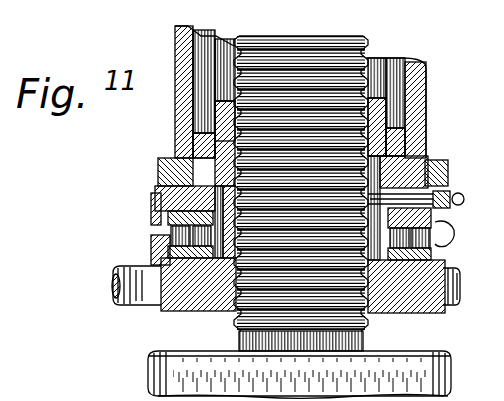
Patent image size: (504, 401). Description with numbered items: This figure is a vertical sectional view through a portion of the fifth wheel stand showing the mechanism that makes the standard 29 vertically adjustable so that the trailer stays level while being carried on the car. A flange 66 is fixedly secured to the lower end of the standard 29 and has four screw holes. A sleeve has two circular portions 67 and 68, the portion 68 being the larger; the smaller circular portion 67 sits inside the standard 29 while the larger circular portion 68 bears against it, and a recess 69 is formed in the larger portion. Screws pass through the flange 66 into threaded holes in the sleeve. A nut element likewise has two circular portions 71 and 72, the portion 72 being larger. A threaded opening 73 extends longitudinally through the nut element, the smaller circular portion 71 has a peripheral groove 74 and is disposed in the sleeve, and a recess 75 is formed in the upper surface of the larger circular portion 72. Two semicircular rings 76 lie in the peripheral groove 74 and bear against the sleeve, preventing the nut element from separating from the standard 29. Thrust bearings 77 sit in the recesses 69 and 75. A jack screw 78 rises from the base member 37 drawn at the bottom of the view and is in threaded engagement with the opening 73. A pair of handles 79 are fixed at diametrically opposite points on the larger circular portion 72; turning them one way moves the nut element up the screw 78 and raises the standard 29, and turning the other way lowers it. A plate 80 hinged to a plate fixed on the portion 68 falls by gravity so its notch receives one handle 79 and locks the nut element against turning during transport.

The standard 29 is at (167, 32).
The base plate 37 is at (148, 358).
The flange 66 is at (428, 152).
The smaller circular portion of sleeve 67 is at (182, 150).
The larger circular portion of sleeve 68 is at (150, 182).
The recess 69 is at (143, 207).
The smaller circular portion of nut element 71 is at (372, 100).
The larger circular portion of nut element 72 is at (388, 292).
The threaded opening 73 is at (198, 295).
The peripheral groove 74 is at (188, 133).
The recess 75 is at (168, 302).
The semicircular rings 76 is at (404, 124).
The thrust bearings 77 is at (416, 224).
The jack screw 78 is at (355, 32).
The handles 79 is at (124, 296).
The plate 80 is at (155, 243).